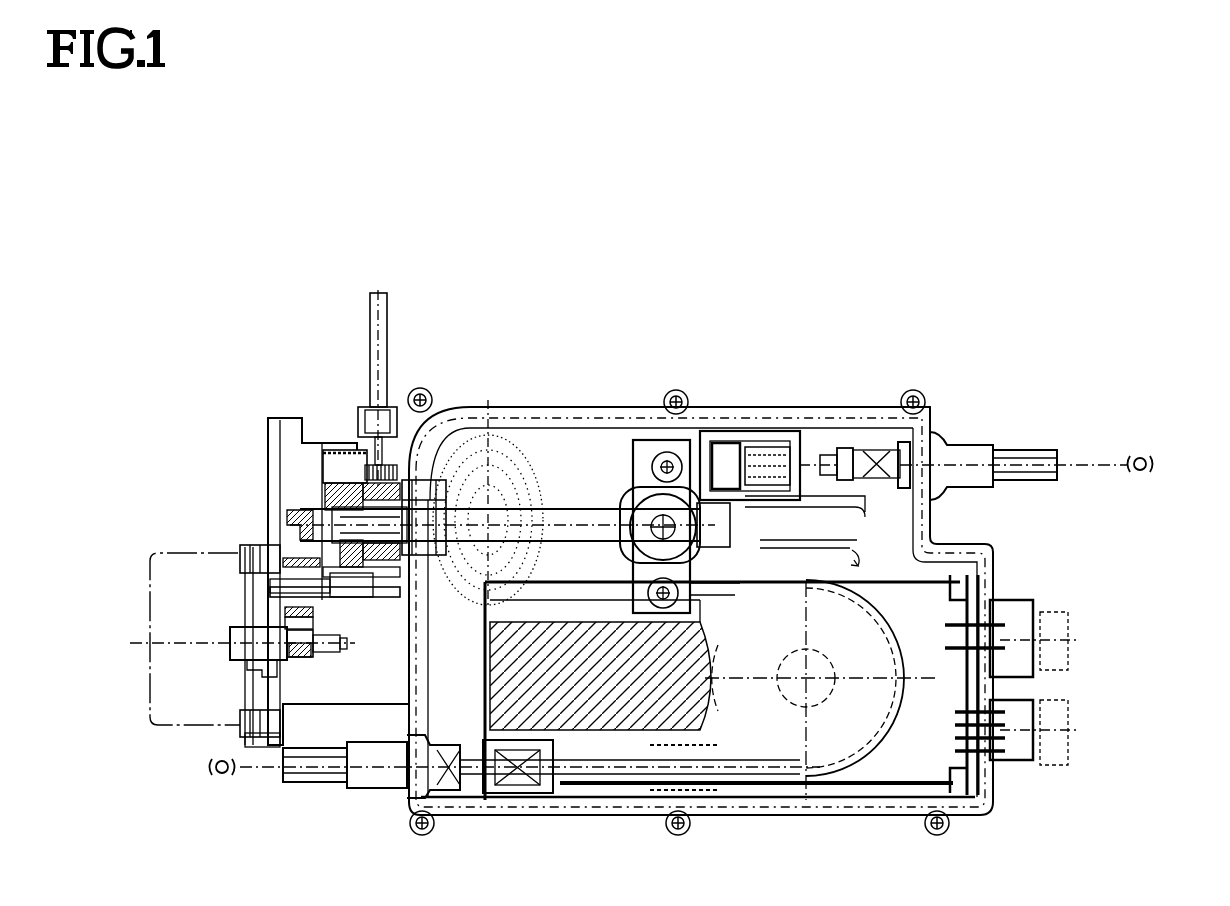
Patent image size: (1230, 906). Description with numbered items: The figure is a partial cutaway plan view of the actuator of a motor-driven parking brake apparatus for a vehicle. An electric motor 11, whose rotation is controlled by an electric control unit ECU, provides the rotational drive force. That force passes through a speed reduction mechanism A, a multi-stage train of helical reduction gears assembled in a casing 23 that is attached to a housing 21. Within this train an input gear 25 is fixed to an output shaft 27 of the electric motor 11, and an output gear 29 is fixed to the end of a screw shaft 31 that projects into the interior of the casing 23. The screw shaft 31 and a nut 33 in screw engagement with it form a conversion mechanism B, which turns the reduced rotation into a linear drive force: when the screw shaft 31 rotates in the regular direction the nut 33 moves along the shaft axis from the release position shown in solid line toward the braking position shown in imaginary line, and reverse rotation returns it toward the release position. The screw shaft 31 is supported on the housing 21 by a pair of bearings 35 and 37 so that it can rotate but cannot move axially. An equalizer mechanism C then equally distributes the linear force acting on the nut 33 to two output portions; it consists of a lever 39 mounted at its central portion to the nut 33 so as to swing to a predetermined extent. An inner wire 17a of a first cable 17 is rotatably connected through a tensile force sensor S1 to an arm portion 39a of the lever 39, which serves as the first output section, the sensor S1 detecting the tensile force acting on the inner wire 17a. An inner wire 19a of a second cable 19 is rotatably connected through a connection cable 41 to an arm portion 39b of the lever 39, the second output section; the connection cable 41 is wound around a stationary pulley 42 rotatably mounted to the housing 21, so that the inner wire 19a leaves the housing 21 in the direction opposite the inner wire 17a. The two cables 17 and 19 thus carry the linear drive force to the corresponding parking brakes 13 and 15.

The electric motor 11 is at (165, 693).
The parking brake 13 is at (1147, 454).
The parking brake 15 is at (222, 775).
The first cable 17 is at (1017, 457).
The inner wire of the first cable 17a is at (1103, 467).
The second cable 19 is at (318, 773).
The inner wire of the second cable 19a is at (262, 778).
The housing 21 is at (603, 815).
The casing 23 is at (317, 440).
The input gear 25 is at (303, 658).
The output shaft 27 is at (340, 635).
The output gear 29 is at (348, 453).
The screw shaft 31 is at (595, 522).
The nut 33 is at (625, 548).
The bearing 35 is at (720, 550).
The bearing 37 is at (422, 548).
The lever 39 is at (633, 463).
The arm portion 39a is at (687, 457).
The arm portion 39b is at (700, 613).
The connection cable 41 is at (733, 587).
The stationary pulley 42 is at (880, 695).
The speed reduction mechanism A is at (307, 547).
The conversion mechanism B is at (563, 510).
The equalizer mechanism C is at (648, 450).
The tensile force sensor S1 is at (763, 430).
The electric control unit ECU is at (927, 742).